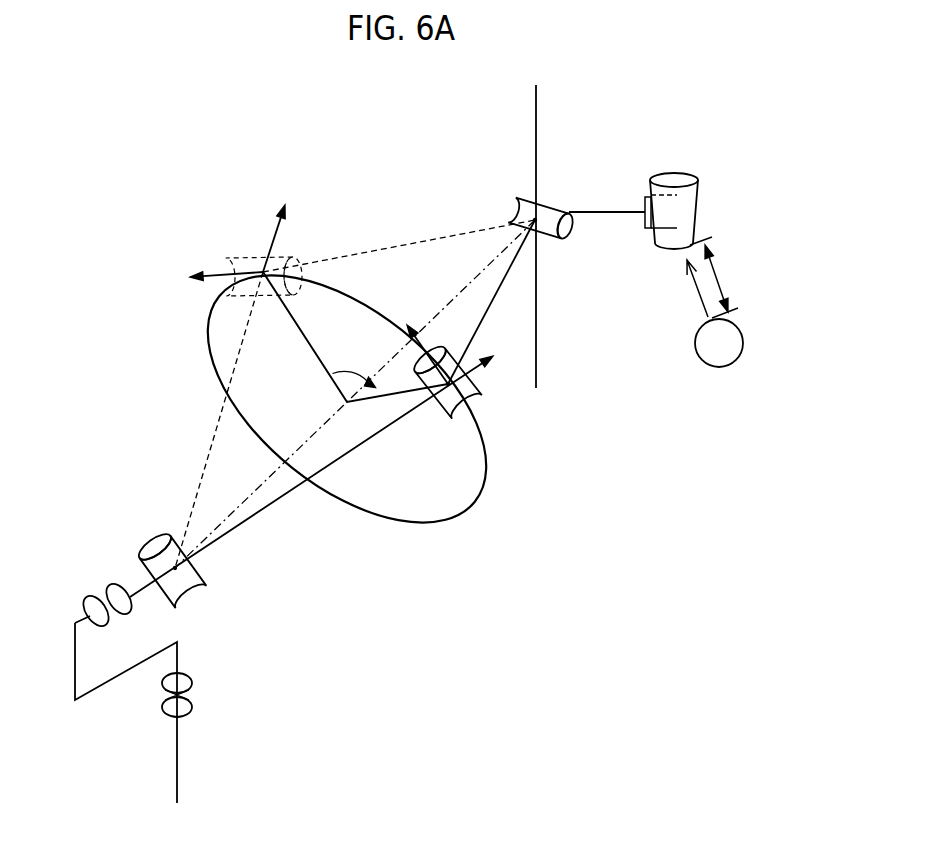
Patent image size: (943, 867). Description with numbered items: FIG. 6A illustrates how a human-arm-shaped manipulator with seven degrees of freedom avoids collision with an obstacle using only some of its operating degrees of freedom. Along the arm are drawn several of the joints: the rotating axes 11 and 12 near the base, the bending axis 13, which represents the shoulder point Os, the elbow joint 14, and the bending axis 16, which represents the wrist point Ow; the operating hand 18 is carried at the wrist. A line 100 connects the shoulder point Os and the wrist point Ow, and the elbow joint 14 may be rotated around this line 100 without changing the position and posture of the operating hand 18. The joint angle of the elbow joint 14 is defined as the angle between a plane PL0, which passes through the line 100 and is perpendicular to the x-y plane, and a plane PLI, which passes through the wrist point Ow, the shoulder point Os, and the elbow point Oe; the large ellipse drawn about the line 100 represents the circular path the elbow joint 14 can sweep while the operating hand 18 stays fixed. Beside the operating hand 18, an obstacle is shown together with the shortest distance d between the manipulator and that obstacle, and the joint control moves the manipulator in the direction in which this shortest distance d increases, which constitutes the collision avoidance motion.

The rotating axis joint 11 is at (192, 683).
The rotating axis joint 12 is at (93, 598).
The bending axis joint 13 is at (207, 578).
The elbow joint 14 is at (250, 257).
The bending axis joint 16 is at (507, 203).
The operating hand 18 is at (665, 247).
The line connecting shoulder point and wrist point 100 is at (247, 498).
The wrist point Ow is at (505, 212).
The elbow point Oe is at (480, 410).
The shoulder point Os is at (170, 568).
The reference plane PL0 is at (407, 267).
The elbow plane PLI is at (470, 311).
The shortest distance d is at (714, 277).